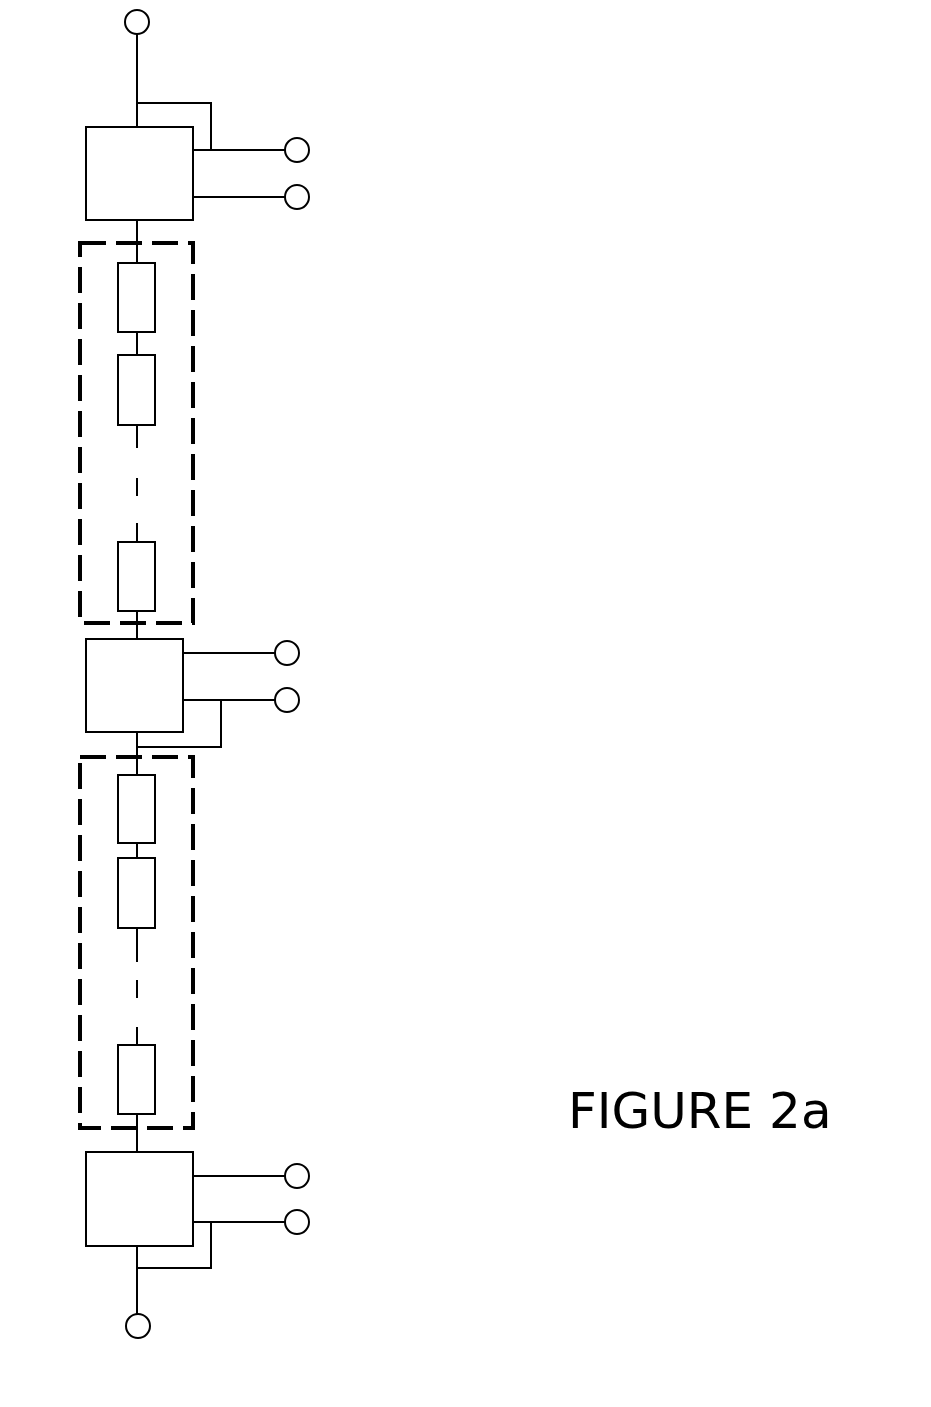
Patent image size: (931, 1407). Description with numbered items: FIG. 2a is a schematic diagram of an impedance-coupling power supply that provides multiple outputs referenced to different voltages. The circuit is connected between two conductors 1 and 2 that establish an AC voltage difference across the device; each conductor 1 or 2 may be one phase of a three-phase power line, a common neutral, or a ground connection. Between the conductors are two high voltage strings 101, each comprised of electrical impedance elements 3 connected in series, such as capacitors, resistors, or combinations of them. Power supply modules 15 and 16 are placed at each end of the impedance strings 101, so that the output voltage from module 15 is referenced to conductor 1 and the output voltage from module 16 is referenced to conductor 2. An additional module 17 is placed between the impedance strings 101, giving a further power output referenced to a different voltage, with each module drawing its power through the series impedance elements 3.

The conductor 1 is at (157, 67).
The conductor 2 is at (162, 1331).
The electrical impedance element 3 is at (145, 392).
The power supply module 15 is at (197, 183).
The power supply module 16 is at (197, 1233).
The additional module 17 is at (192, 707).
The high voltage string 101 is at (193, 457).